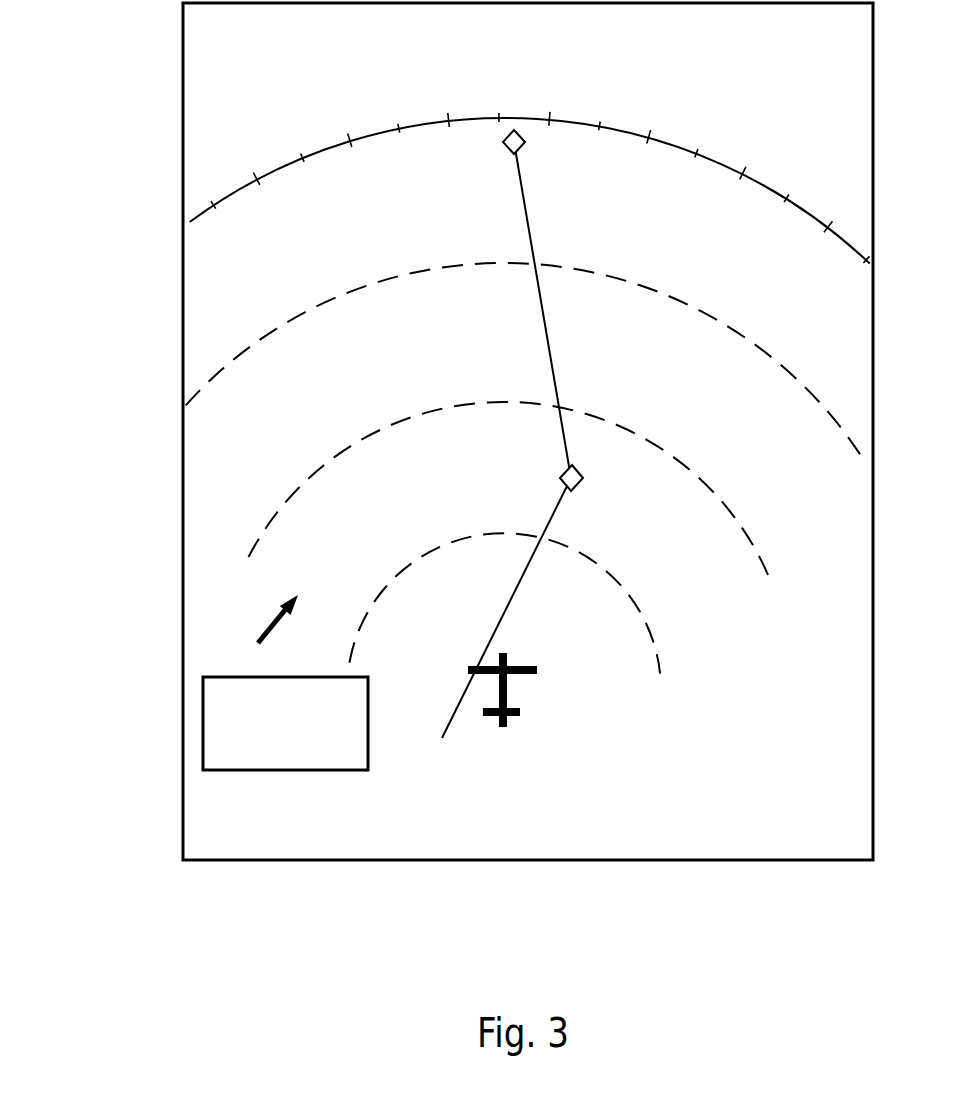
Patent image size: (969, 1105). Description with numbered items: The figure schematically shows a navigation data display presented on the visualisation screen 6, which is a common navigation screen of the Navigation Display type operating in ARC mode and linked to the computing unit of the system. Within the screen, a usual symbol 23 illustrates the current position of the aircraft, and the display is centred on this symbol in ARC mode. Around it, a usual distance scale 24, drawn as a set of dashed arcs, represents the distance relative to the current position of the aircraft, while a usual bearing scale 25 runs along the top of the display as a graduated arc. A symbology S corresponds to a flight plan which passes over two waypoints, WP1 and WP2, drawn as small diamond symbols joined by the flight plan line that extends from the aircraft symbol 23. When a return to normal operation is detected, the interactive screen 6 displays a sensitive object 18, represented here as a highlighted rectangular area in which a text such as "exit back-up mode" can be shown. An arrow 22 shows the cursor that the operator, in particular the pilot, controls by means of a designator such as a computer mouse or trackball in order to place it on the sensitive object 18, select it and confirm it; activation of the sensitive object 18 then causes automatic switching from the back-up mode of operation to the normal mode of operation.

The visualisation screen 6 is at (658, 860).
The sensitive object 18 is at (203, 720).
The arrow 22 is at (262, 632).
The symbol 23 is at (507, 685).
The distance scale 24 is at (228, 382).
The bearing scale 25 is at (190, 208).
The symbology S is at (520, 346).
The waypoint WP1 is at (582, 485).
The waypoint WP2 is at (525, 148).